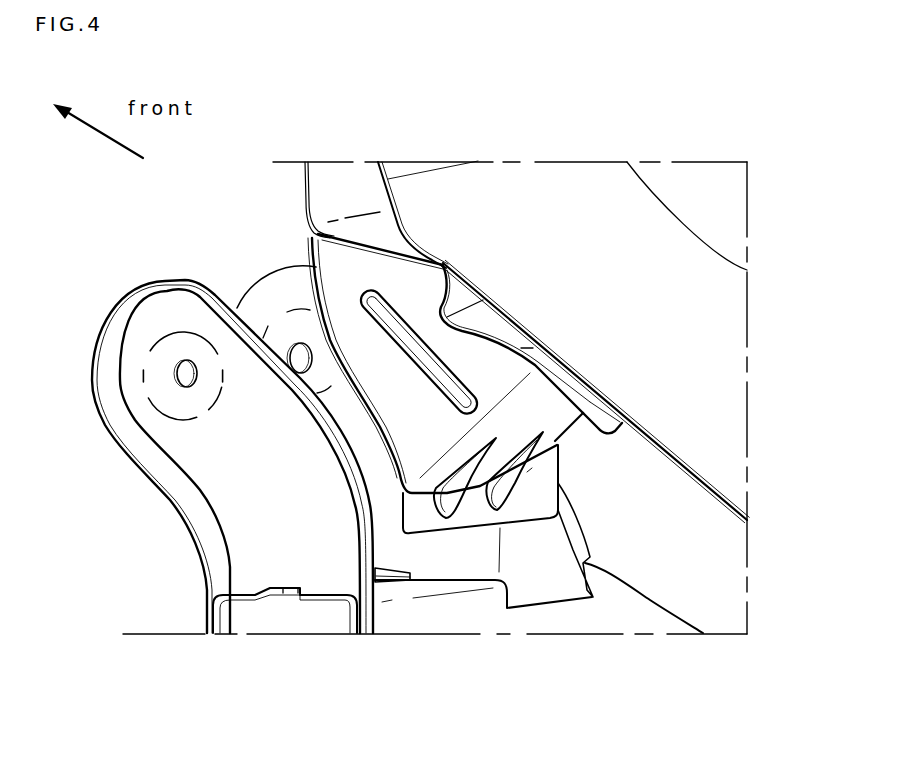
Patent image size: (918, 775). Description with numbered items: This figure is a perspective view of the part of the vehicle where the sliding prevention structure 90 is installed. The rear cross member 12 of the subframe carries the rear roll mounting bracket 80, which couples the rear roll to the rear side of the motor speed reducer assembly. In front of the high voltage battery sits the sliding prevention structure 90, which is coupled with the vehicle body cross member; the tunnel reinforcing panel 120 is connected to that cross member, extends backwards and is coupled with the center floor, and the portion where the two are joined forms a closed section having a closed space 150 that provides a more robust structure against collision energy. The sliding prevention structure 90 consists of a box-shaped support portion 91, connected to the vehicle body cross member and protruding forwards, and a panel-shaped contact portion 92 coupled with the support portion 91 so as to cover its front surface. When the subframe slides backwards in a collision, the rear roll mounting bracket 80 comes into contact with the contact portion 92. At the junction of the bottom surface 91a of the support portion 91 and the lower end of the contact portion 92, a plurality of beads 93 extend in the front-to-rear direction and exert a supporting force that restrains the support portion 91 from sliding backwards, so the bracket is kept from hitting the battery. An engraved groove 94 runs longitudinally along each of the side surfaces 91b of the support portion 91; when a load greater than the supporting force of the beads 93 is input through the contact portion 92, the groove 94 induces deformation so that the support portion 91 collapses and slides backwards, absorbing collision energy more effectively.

The rear cross member 12 is at (445, 618).
The rear roll mounting bracket 80 is at (287, 330).
The sliding prevention structure 90 is at (325, 371).
The support portion 91 is at (355, 270).
The bottom surface 91a is at (543, 403).
The side surfaces 91b is at (421, 290).
The contact portion 92 is at (303, 267).
The beads 93 is at (458, 493).
The engraved groove 94 is at (450, 380).
The tunnel reinforcing panel 120 is at (692, 327).
The closed space 150 is at (527, 347).